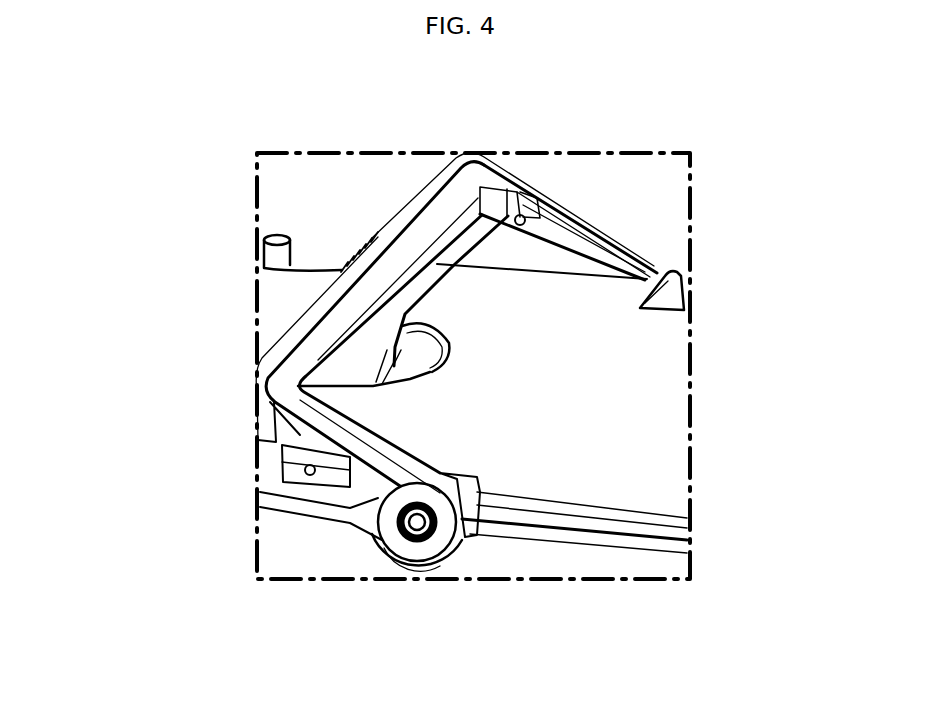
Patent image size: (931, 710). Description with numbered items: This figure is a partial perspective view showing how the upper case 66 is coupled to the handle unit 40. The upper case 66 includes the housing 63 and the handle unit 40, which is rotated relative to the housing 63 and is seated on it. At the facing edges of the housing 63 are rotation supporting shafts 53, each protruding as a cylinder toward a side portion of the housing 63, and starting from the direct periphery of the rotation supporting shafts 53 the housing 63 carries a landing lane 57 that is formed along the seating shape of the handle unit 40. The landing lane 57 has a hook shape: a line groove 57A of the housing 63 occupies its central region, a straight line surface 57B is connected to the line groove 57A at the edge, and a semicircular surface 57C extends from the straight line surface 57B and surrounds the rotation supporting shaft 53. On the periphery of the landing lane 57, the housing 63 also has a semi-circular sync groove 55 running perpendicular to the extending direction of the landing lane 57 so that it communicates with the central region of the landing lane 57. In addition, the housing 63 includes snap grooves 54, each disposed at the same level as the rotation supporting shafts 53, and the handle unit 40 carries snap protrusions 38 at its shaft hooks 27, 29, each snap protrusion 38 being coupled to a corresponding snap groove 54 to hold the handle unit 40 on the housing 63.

The handle unit 40 is at (410, 237).
The snap protrusion 38 is at (520, 190).
The shaft hook 27 is at (583, 237).
The semi-circular sync groove 55 is at (454, 349).
The housing 63 is at (668, 412).
The upper case 66 is at (540, 366).
The shaft hook 29 is at (395, 452).
The rotation supporting shaft 53 is at (437, 561).
The snap groove 54 is at (277, 487).
The landing lane 57 is at (280, 538).
The line groove 57A is at (277, 445).
The straight line surface 57B is at (270, 517).
The semicircular surface 57C is at (388, 561).